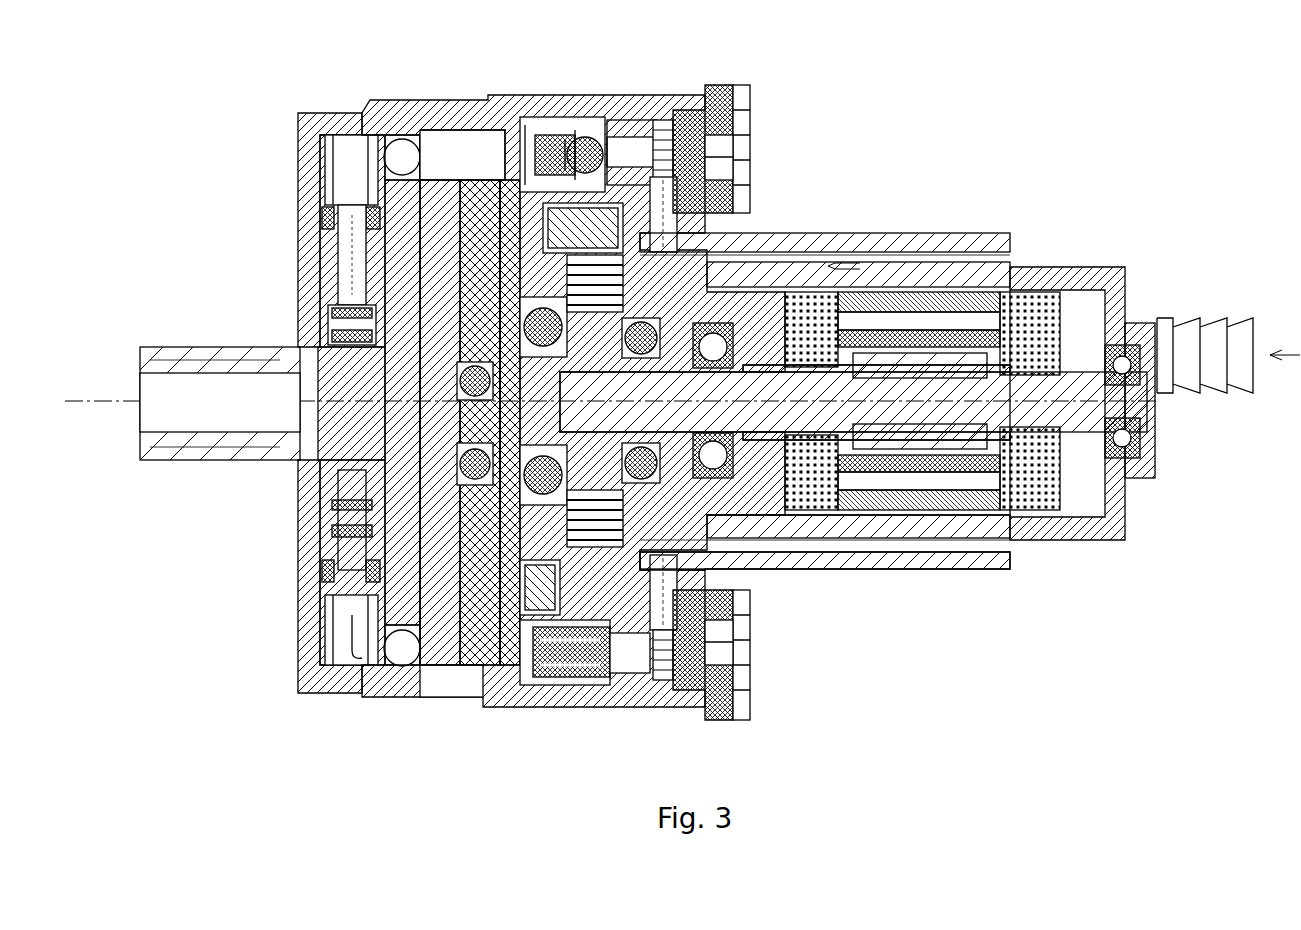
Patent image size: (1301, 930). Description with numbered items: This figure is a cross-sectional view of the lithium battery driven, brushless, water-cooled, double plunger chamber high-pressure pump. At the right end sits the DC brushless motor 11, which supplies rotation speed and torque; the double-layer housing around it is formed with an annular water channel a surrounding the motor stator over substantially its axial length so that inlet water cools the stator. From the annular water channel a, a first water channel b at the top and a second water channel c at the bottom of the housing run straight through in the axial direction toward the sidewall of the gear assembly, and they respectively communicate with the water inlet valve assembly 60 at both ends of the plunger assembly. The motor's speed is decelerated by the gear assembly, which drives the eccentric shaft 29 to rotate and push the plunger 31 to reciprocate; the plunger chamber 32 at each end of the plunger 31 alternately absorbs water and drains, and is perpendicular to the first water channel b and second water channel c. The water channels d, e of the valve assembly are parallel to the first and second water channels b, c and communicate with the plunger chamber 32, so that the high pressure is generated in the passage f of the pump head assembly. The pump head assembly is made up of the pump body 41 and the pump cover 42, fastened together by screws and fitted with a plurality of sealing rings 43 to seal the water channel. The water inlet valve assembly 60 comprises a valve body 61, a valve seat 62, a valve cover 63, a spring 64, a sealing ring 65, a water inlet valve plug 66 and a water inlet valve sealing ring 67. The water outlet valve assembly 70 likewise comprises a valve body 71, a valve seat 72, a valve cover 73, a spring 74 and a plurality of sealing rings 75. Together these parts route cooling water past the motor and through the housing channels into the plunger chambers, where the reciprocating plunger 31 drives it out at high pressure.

The DC brushless motor 11 is at (1028, 263).
The eccentric shaft 29 is at (652, 505).
The plunger 31 is at (520, 615).
The plunger chamber 32 is at (437, 165).
The pump body 41 is at (285, 440).
The pump cover 42 is at (457, 647).
The sealing ring 43 is at (537, 623).
The water inlet valve assembly 60 is at (650, 667).
The valve body 61 is at (580, 120).
The valve seat 62 is at (650, 110).
The valve cover 63 is at (540, 688).
The spring 64 is at (540, 125).
The sealing ring 65 is at (745, 150).
The water inlet valve plug 66 is at (720, 120).
The water inlet valve sealing ring 67 is at (745, 190).
The water outlet valve assembly 70 is at (323, 555).
The valve body 71 is at (343, 307).
The valve seat 72 is at (350, 217).
The valve cover 73 is at (320, 490).
The spring 74 is at (330, 350).
The sealing ring 75 is at (317, 220).
The annular water channel a is at (912, 268).
The first water channel b is at (803, 265).
The second water channel c is at (810, 545).
The water channel d is at (520, 140).
The water channel e is at (587, 677).
The passage f is at (207, 413).